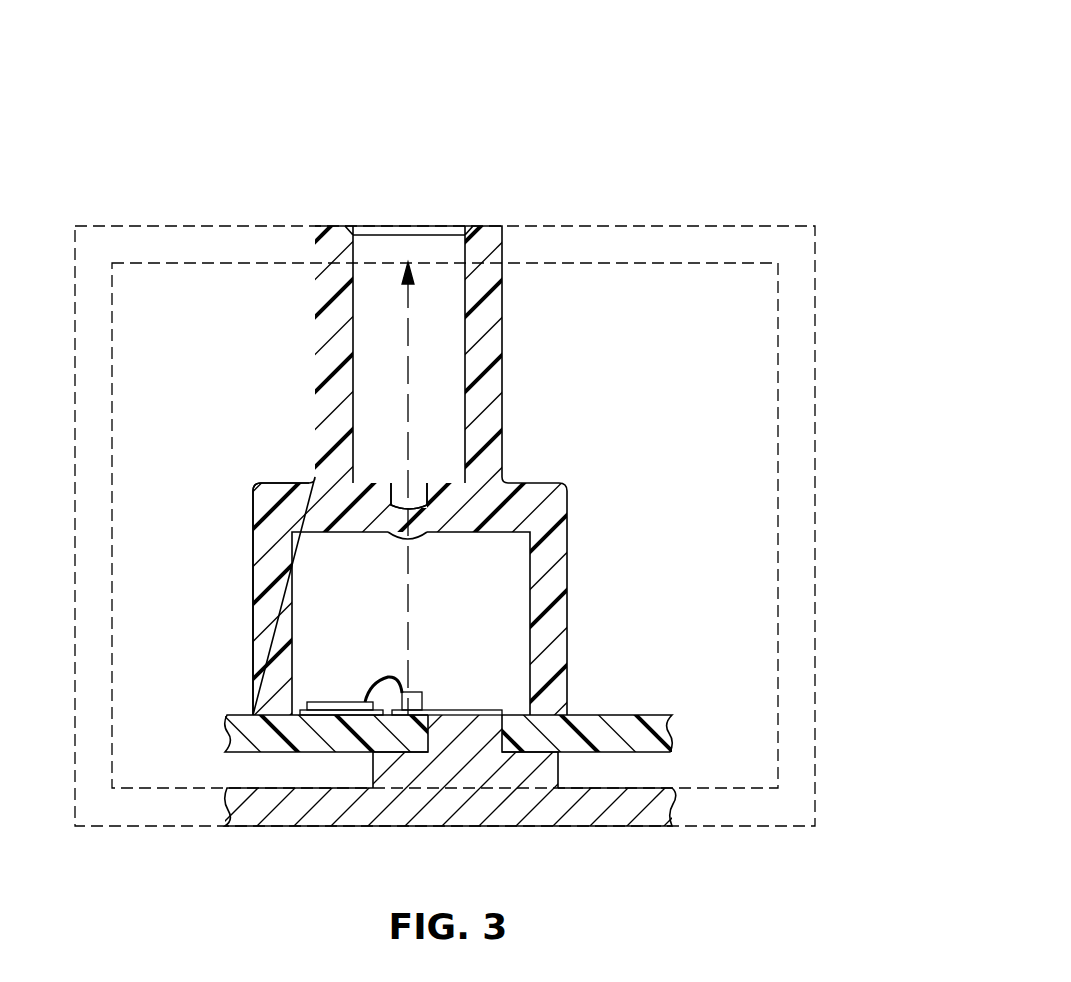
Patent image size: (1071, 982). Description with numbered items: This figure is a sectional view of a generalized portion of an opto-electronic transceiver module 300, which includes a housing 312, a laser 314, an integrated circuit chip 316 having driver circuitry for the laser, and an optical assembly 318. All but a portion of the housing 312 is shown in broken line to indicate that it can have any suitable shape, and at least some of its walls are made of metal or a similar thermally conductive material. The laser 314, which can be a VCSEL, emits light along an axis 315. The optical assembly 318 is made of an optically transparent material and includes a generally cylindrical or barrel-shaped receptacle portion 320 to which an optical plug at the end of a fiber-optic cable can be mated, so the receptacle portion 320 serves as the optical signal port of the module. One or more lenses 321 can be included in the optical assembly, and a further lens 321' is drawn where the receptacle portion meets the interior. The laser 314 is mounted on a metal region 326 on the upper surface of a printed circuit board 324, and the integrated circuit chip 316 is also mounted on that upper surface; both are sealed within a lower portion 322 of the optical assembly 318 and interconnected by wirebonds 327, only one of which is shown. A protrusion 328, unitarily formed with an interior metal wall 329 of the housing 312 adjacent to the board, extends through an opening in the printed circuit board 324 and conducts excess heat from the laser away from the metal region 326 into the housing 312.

The opto-electronic transceiver module 300 is at (650, 97).
The housing 312 is at (275, 827).
The laser 314 is at (424, 691).
The axis 315 is at (408, 367).
The integrated circuit chip 316 is at (320, 701).
The optical assembly 318 is at (584, 543).
The receptacle portion 320 is at (438, 226).
The lens 321 is at (432, 556).
The lens recess 321' is at (394, 472).
The lower portion 322 is at (252, 579).
The printed circuit board 324 is at (598, 715).
The metal region 326 is at (462, 709).
The wirebond 327 is at (382, 676).
The protrusion 328 is at (512, 752).
The interior metal wall 329 is at (246, 783).